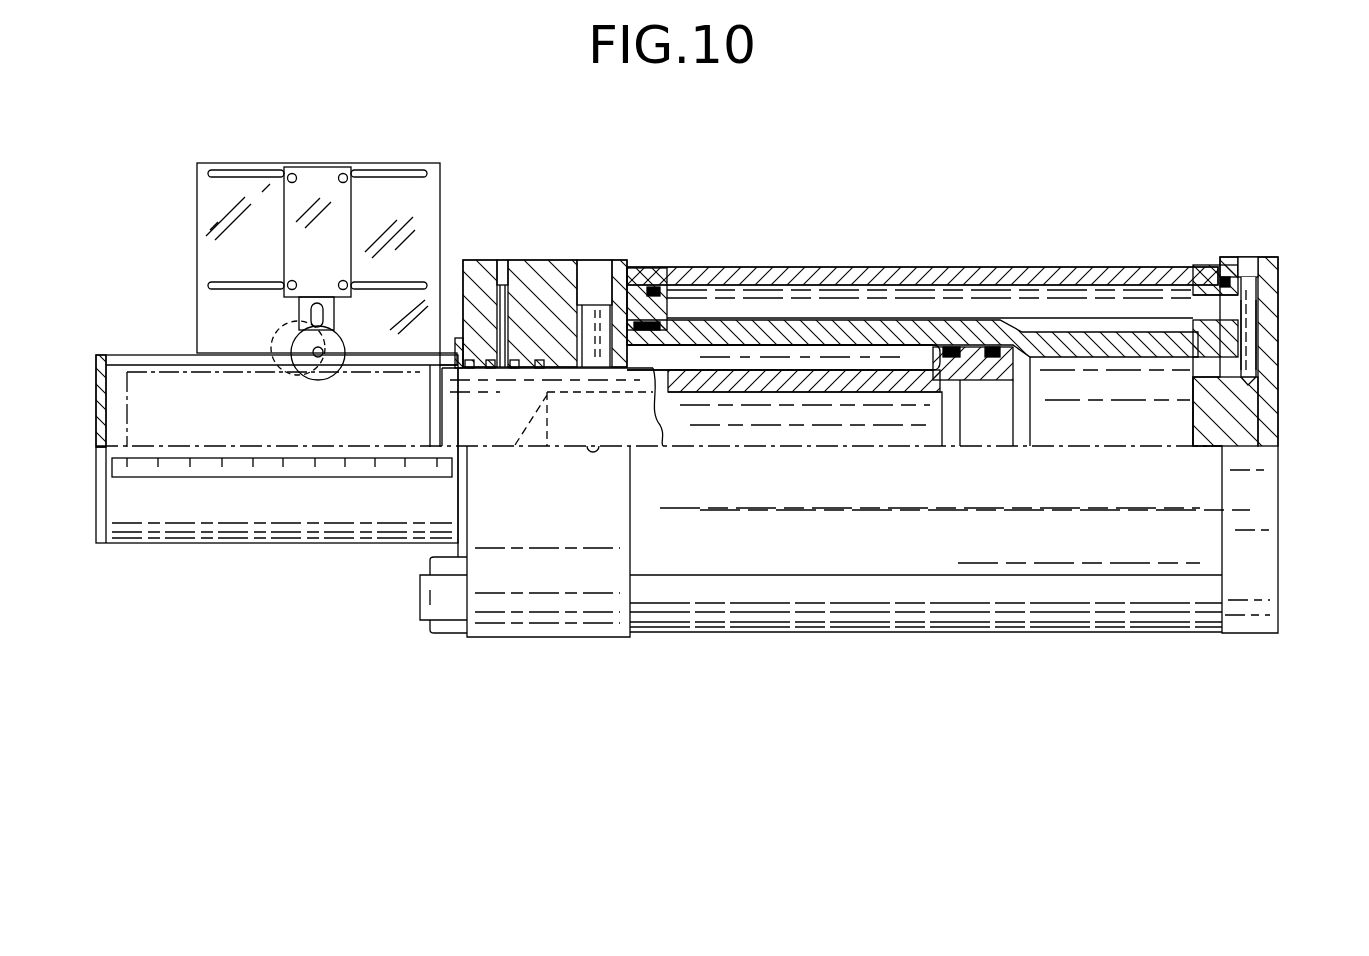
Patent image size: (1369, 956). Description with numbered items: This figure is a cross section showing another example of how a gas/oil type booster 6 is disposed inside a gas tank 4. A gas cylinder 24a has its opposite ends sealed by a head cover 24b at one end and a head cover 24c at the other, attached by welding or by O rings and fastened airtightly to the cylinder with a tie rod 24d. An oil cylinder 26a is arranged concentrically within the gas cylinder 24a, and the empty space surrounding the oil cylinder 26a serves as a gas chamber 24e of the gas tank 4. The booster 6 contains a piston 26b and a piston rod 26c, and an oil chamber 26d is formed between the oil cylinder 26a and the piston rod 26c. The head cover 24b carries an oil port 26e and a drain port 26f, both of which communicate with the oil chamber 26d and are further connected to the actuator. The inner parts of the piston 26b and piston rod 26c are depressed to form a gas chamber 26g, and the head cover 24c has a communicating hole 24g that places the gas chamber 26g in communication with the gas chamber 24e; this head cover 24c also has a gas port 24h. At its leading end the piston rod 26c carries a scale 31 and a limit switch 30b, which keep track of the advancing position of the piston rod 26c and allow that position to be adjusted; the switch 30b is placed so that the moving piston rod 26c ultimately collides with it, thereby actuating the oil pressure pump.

The gas tank 4 is at (897, 268).
The gas/oil type booster 6 is at (738, 352).
The gas cylinder 24a is at (1070, 272).
The head cover 24b is at (475, 260).
The head cover 24c is at (1270, 377).
The tie rod 24d is at (1032, 603).
The gas chamber 24e is at (1160, 293).
The communicating hole 24g is at (1253, 325).
The gas port 24h is at (1248, 260).
The oil cylinder 26a is at (808, 330).
The piston 26b is at (978, 350).
The piston rod 26c is at (498, 430).
The oil chamber 26d is at (702, 357).
The oil port 26e is at (597, 257).
The drain port 26f is at (503, 262).
The gas chamber 26g is at (838, 428).
The limit switch 30b is at (300, 352).
The scale 31 is at (202, 472).